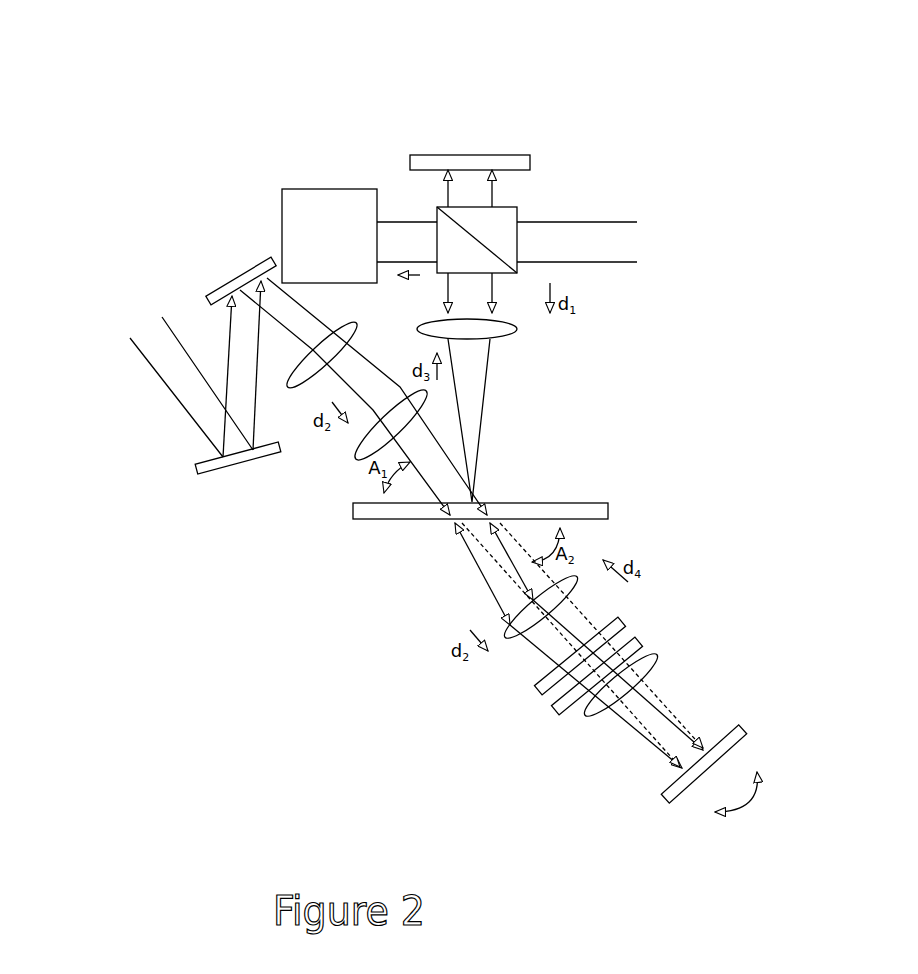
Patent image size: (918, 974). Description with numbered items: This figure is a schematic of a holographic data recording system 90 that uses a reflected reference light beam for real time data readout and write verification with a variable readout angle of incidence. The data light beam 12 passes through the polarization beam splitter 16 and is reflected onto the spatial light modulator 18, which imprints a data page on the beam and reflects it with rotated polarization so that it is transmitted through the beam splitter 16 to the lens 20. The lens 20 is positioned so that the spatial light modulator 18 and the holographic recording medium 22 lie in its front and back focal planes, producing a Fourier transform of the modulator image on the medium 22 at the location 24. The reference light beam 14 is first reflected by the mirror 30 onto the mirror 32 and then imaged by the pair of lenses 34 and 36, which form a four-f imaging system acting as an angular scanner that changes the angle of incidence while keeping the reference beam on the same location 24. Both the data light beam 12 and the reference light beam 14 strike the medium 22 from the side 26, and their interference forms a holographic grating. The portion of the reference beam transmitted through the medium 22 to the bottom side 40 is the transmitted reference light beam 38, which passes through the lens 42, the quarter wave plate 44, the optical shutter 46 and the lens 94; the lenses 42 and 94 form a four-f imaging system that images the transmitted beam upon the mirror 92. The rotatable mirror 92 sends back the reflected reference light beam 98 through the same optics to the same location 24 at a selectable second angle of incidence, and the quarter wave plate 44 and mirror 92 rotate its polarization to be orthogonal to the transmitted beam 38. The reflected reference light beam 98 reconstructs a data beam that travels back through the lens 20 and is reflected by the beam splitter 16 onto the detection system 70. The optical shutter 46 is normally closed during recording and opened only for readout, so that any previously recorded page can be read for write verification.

The holographic data recording system 90 is at (263, 115).
The detection system 70 is at (300, 202).
The spatial light modulator 18 is at (470, 155).
The polarization beam splitter 16 is at (505, 230).
The data light beam 12 is at (578, 222).
The lens 20 is at (490, 331).
The location 24 is at (473, 498).
The reference light beam 14 is at (167, 387).
The mirror 30 is at (240, 468).
The mirror 32 is at (243, 272).
The lens 34 is at (293, 385).
The lens 36 is at (360, 453).
The holographic recording medium 22 is at (573, 505).
The side 26 is at (548, 472).
The transmitted reference light beam 38 is at (473, 563).
The reflected reference light beam 98 is at (588, 615).
The bottom side 40 is at (420, 655).
The lens 42 is at (513, 637).
The optical shutter 46 is at (632, 625).
The quarter wave plate 44 is at (642, 642).
The lens 94 is at (643, 665).
The mirror 92 is at (740, 730).